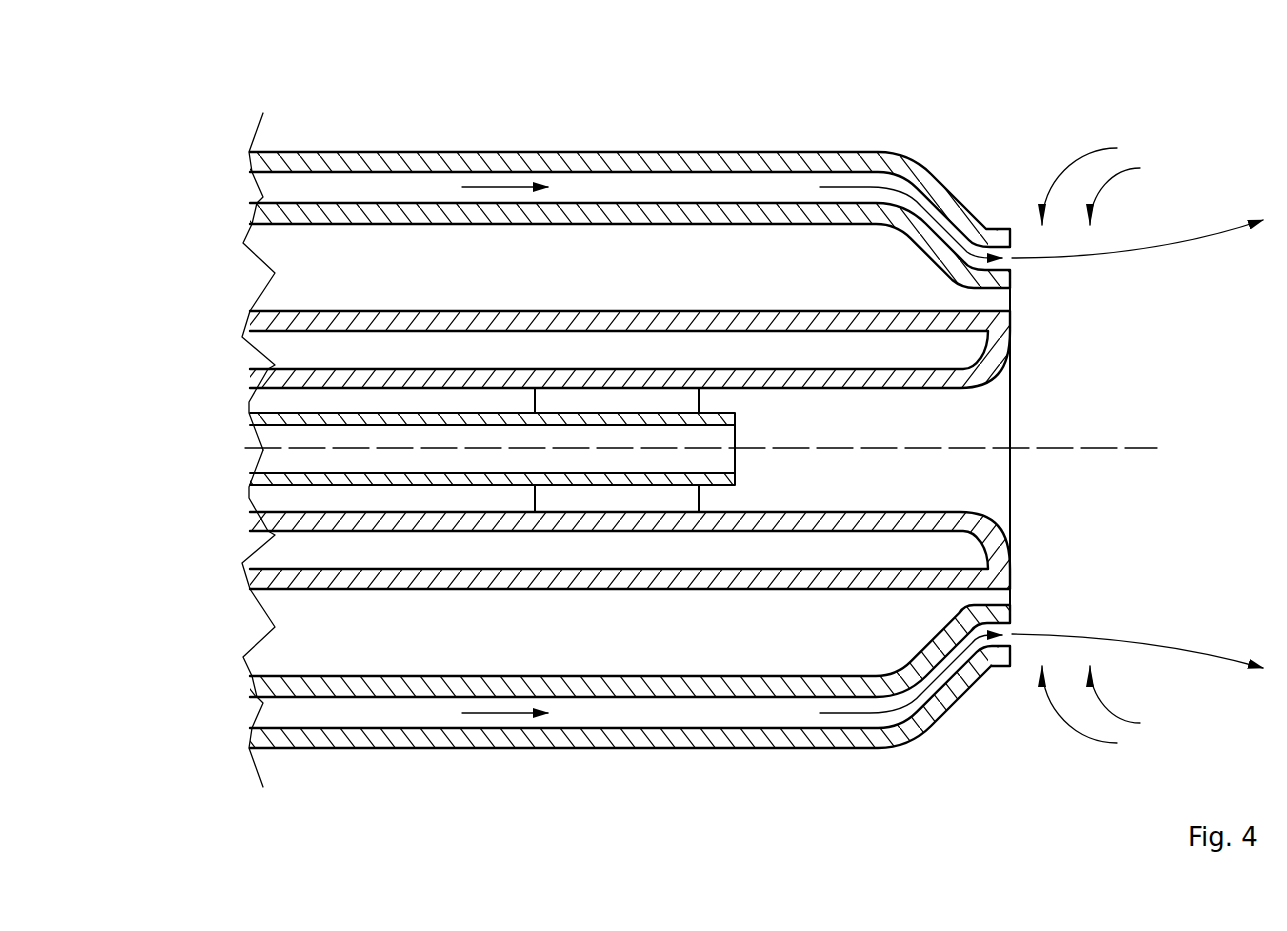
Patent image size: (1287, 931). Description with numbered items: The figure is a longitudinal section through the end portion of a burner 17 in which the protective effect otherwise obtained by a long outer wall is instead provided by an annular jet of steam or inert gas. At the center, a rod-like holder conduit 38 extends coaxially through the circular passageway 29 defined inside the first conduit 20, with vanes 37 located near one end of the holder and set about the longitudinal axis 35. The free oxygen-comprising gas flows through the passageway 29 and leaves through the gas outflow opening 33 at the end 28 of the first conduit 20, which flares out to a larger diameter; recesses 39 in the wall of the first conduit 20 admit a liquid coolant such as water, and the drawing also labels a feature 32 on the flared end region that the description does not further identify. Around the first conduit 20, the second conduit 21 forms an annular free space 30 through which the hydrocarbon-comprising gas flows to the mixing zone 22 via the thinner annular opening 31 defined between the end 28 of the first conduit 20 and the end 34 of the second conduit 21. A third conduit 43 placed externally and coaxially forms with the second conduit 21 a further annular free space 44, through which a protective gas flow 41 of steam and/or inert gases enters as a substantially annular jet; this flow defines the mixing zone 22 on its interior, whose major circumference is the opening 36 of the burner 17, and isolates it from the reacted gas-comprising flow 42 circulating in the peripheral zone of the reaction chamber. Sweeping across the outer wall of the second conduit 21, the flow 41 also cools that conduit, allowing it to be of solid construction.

The burner 17 is at (147, 125).
The first conduit 20 is at (513, 323).
The second conduit 21 is at (377, 225).
The mixing zone 22 is at (1085, 435).
The end of the first conduit 28 is at (1012, 315).
The circular passageway 29 is at (897, 435).
The annular free space 30 is at (640, 287).
The annular opening 31 is at (993, 297).
The nose 32 is at (1002, 513).
The gas outflow opening 33 is at (1012, 460).
The end of the second conduit 34 is at (1010, 275).
The longitudinal axis 35 is at (1132, 446).
The opening of the burner 36 is at (1011, 300).
The vanes 37 is at (697, 399).
The conduit 38 is at (320, 421).
The recess 39 is at (832, 352).
The protective gas flow 41 is at (500, 187).
The reacted gas-comprising flow 42 is at (1098, 188).
The third conduit 43 is at (397, 152).
The annular free space 44 is at (688, 190).